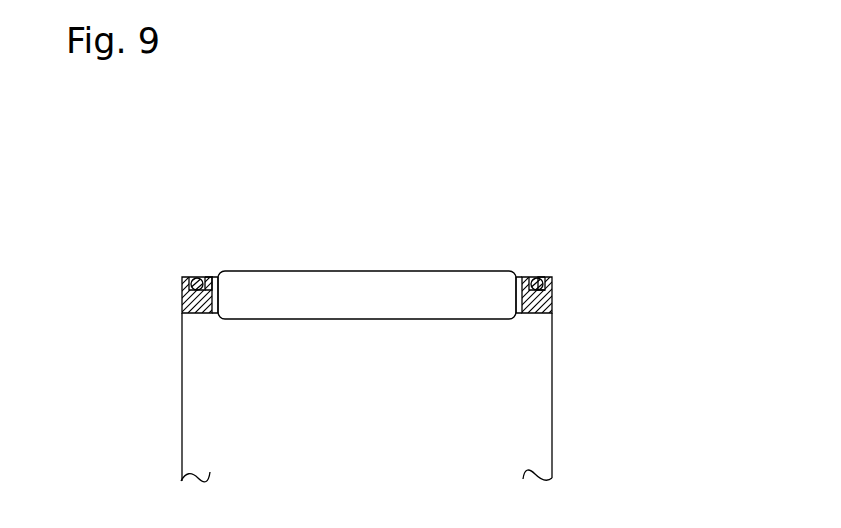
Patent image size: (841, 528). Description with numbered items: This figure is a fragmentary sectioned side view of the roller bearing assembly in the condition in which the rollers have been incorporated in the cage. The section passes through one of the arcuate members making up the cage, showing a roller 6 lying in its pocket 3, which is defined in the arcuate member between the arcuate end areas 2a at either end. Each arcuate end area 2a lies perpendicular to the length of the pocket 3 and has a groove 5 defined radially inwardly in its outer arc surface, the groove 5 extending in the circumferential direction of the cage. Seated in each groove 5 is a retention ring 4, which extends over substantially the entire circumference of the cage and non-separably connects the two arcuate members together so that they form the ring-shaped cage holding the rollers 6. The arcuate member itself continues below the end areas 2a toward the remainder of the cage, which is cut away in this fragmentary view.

The arcuate end area 2a is at (180, 298).
The roller pocket 3 is at (215, 275).
The retention ring 4 is at (200, 277).
The groove 5 is at (195, 275).
The roller 6 is at (353, 282).